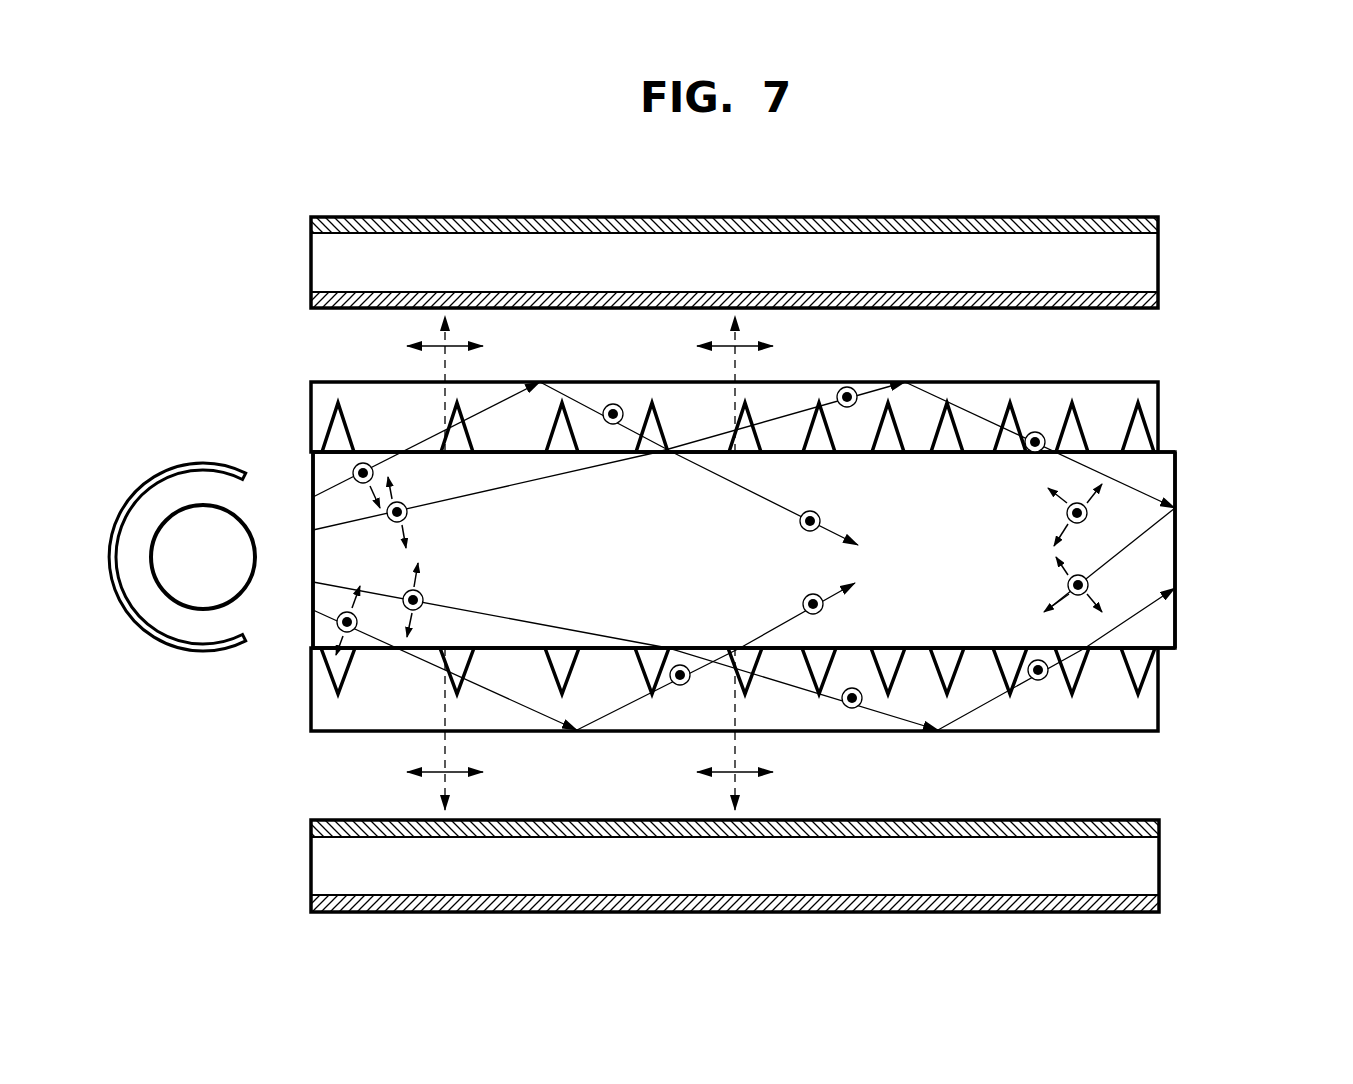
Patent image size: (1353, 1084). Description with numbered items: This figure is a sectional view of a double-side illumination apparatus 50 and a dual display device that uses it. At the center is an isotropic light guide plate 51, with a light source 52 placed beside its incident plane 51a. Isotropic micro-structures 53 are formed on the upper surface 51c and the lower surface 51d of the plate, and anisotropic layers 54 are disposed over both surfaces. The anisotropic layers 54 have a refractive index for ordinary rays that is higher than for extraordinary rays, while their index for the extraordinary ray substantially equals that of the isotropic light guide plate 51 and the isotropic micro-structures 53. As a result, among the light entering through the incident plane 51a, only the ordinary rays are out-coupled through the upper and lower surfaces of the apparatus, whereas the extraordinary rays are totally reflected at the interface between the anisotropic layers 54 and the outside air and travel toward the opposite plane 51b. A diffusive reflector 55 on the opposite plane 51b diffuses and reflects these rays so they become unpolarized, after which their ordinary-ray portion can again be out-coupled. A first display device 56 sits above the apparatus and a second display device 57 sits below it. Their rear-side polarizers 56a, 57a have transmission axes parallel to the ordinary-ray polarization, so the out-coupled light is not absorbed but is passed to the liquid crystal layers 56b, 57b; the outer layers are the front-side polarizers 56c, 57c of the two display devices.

The double-side illumination apparatus 50 is at (799, 574).
The isotropic light guide plate 51 is at (791, 550).
The incident plane 51a is at (315, 557).
The opposite plane 51b is at (1175, 478).
The upper surface 51c is at (915, 453).
The lower surface 51d is at (948, 640).
The light source 52 is at (165, 572).
The isotropic micro-structures 53 is at (1158, 445).
The anisotropic layers 54 is at (1158, 391).
The diffusive reflector 55 is at (1175, 520).
The first display device 56 is at (824, 257).
The rear-side polarizer 56a is at (790, 299).
The liquid crystal layer 56b is at (1158, 263).
The front-side polarizer 56c is at (1158, 222).
The second display device 57 is at (824, 861).
The rear-side polarizer 57a is at (1159, 822).
The liquid crystal layer 57b is at (1159, 866).
The front-side polarizer 57c is at (790, 904).